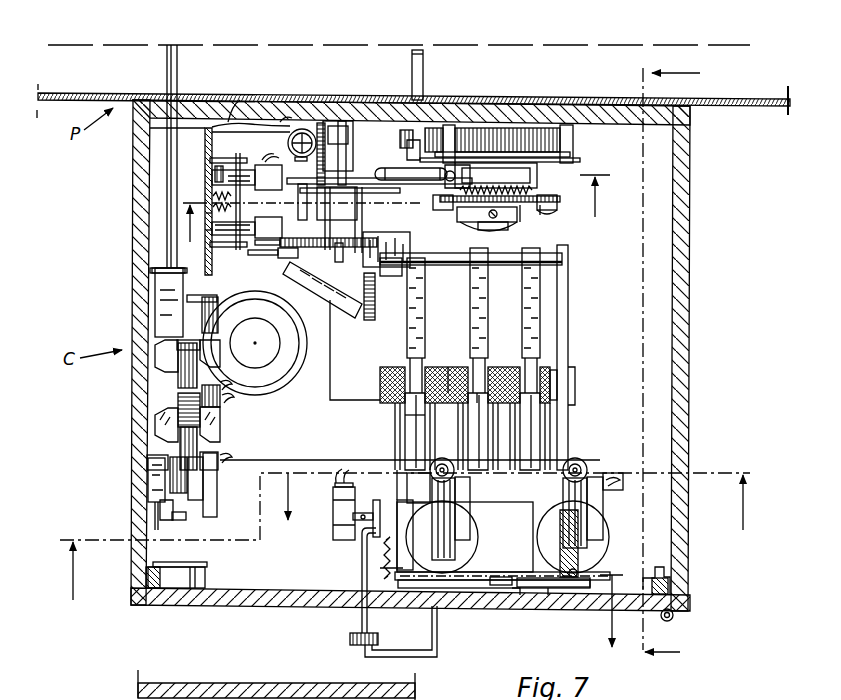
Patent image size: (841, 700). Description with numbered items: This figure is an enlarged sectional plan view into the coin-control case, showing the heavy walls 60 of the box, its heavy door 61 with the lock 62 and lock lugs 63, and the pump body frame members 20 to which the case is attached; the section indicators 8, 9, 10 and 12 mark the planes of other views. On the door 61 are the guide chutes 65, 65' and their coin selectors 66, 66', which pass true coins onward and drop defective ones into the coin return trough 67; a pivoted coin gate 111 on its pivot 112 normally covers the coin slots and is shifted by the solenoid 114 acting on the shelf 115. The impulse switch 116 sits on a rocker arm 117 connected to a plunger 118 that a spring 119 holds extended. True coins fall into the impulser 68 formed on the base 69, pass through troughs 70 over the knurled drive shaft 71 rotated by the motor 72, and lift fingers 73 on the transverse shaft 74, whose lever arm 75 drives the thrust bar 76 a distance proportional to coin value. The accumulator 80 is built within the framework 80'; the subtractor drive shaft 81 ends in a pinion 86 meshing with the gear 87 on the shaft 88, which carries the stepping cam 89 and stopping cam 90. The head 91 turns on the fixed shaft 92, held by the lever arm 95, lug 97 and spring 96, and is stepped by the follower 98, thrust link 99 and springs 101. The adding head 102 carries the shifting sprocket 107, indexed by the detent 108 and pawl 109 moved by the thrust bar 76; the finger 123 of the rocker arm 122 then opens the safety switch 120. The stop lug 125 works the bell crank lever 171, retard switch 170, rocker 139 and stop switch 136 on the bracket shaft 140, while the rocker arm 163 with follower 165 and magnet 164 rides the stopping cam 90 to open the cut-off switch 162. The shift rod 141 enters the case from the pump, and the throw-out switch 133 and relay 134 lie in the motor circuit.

The cover plates and frame members 20 is at (708, 99).
The walls 60 is at (690, 275).
The shift rod 141 is at (166, 63).
The section line 10 is at (692, 363).
The section line 9 is at (421, 539).
The section line 8 is at (455, 560).
The section line 12 is at (395, 221).
The subtractor drive shaft 81 is at (421, 76).
The bracket-supported shaft 140 is at (251, 138).
The framework 80' is at (385, 98).
The spring 96 is at (286, 122).
The adding and subtracting head 91 is at (315, 172).
The fixed shaft 92 is at (340, 128).
The pinion 86 is at (405, 130).
The lug 97 is at (348, 158).
The lever arm 95 is at (368, 146).
The thrust link 99 is at (428, 172).
The follower 98 is at (453, 172).
The gear 87 is at (562, 142).
The stepping cam 89 is at (560, 156).
The springs 101 is at (538, 171).
The rocker arm 163 is at (550, 193).
The follower 165 is at (557, 203).
The magnet 164 is at (556, 212).
The magnet-operated switch 120 is at (467, 222).
The shaft 88 is at (490, 230).
The stopping cam 90 is at (521, 216).
The cut-off switch 162 is at (541, 211).
The retard switch 170 is at (225, 178).
The bell crank lever 171 is at (215, 182).
The rocker 139 is at (213, 212).
The stop switch 136 is at (217, 230).
The adding head 102 is at (333, 196).
The rocker arm 122 is at (408, 191).
The tooth shifting sprocket 107 is at (365, 240).
The stop lug 125 is at (286, 248).
The detent 108 is at (258, 254).
The pawl 109 is at (278, 248).
The finger 123 is at (402, 270).
The thrust bar 76 is at (350, 300).
The motor 72 is at (291, 345).
The throw-out switch 133 is at (150, 478).
The motor-switch relay 134 is at (175, 516).
The lock 62 is at (204, 587).
The accumulator 80 is at (491, 356).
The lever arm 75 is at (408, 312).
The fingers 73 is at (470, 318).
The transverse shaft 74 is at (533, 322).
The troughs 70 is at (430, 442).
The impulser 68 is at (573, 408).
The base 69 is at (577, 307).
The knurled drive shaft 71 is at (448, 368).
The coin selector 66' is at (496, 365).
The coin selector 66 is at (582, 375).
The guide chute 65 is at (410, 448).
The guide chute 65' is at (503, 530).
The door 61 is at (495, 606).
The pivot 112 is at (518, 592).
The coin gate 111 is at (550, 592).
The solenoid 114 is at (600, 562).
The shelf 115 is at (590, 580).
The lock lugs 63 is at (652, 575).
The rocker arm 117 is at (378, 498).
The impulse switch 116 is at (332, 538).
The spring 119 is at (383, 552).
The plunger 118 is at (358, 622).
The coin return trough 67 is at (362, 654).